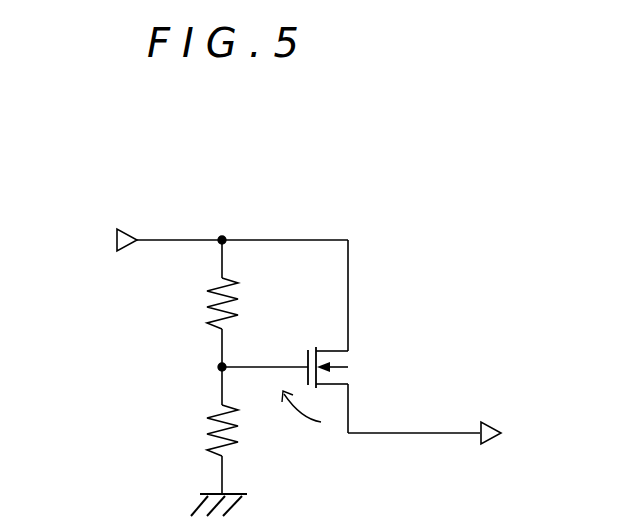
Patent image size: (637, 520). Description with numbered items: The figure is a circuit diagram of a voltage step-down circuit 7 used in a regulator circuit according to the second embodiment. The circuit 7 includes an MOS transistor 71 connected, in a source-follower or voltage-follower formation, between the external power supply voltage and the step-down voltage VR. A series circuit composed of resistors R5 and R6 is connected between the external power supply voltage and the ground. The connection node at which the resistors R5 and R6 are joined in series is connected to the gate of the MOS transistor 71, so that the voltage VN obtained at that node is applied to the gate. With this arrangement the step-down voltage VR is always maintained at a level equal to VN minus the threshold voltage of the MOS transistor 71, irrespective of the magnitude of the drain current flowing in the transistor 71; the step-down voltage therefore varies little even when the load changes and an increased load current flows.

The reference voltage generating circuit 7 is at (409, 217).
The MOS transistor 71 is at (358, 365).
The resistor R5 is at (194, 303).
The resistor R6 is at (194, 430).